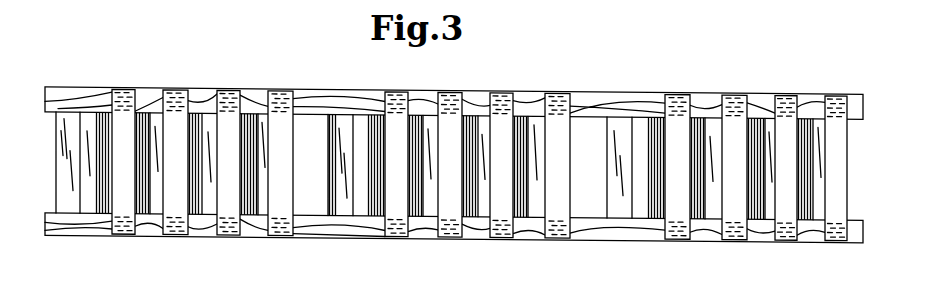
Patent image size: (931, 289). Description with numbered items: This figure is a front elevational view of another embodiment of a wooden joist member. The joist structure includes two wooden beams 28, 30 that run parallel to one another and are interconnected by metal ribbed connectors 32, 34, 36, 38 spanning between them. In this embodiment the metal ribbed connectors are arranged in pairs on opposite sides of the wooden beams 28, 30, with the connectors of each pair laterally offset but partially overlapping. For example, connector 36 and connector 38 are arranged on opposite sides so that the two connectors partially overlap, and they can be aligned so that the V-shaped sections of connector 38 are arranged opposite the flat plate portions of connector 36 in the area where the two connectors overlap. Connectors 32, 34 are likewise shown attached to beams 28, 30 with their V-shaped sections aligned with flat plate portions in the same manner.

The wooden beam 28 is at (83, 85).
The wooden beam 30 is at (67, 236).
The metal ribbed connector 32 is at (62, 170).
The metal ribbed connector 34 is at (125, 88).
The metal ribbed connector 36 is at (335, 171).
The metal ribbed connector 38 is at (398, 87).